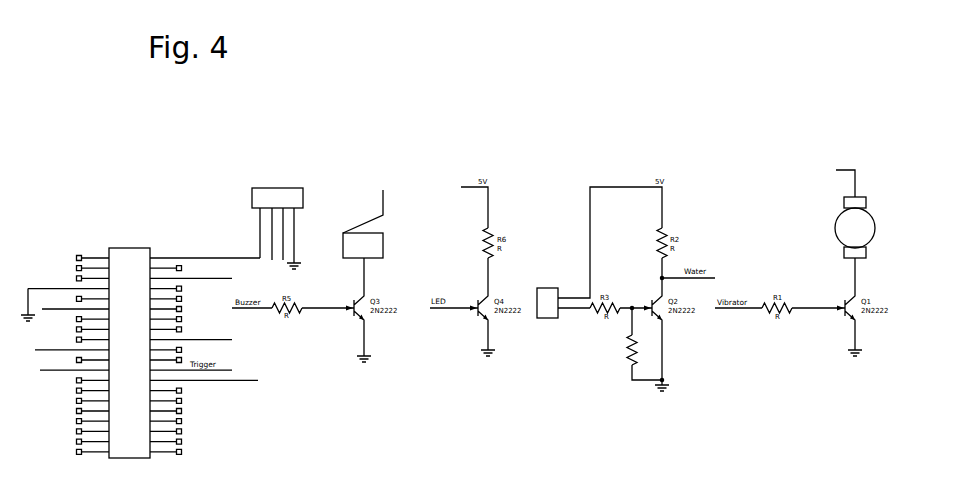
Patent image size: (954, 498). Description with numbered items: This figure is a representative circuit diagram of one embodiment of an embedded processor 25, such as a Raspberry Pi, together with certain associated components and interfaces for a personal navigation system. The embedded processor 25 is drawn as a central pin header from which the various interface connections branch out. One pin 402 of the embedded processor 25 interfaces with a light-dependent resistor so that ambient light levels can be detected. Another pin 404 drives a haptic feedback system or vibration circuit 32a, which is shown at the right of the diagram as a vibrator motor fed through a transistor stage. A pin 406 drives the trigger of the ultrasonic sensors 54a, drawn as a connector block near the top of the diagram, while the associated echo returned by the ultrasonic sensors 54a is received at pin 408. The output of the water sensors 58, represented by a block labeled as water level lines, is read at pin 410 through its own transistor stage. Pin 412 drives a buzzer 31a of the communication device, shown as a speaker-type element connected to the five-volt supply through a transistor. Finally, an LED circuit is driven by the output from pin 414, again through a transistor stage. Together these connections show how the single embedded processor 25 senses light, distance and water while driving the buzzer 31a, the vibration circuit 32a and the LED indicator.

The embedded processor 25 is at (99, 220).
The pin 402 is at (45, 306).
The pin 404 is at (42, 352).
The pin 406 is at (194, 258).
The pin 408 is at (53, 374).
The pin 410 is at (209, 281).
The pin 412 is at (216, 342).
The pin 414 is at (208, 384).
The ultrasonic sensors 54a is at (252, 202).
The buzzer 31a is at (383, 250).
The water sensors 58 is at (549, 288).
The vibration circuit 32a is at (876, 228).